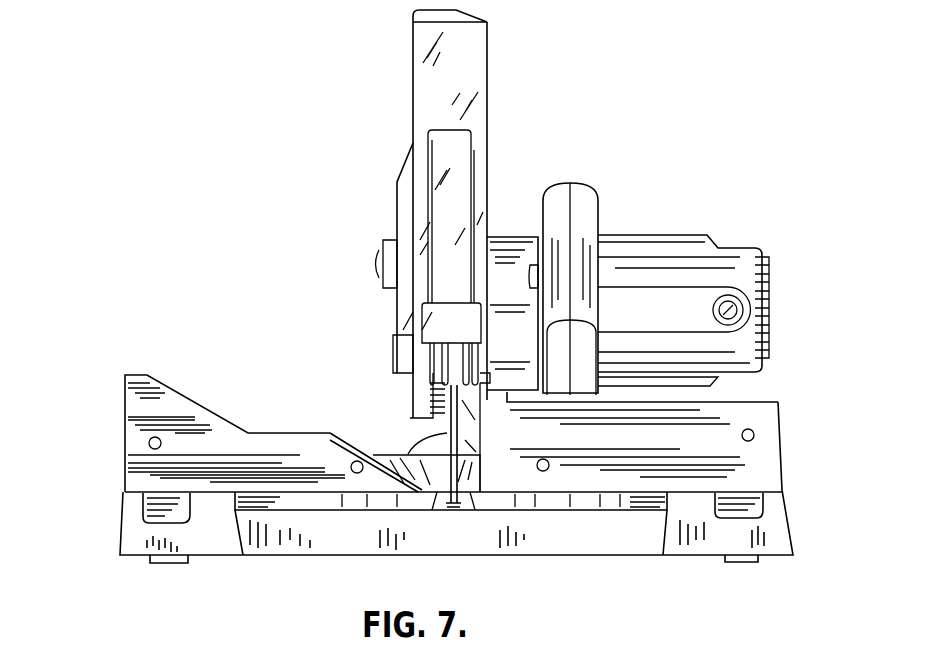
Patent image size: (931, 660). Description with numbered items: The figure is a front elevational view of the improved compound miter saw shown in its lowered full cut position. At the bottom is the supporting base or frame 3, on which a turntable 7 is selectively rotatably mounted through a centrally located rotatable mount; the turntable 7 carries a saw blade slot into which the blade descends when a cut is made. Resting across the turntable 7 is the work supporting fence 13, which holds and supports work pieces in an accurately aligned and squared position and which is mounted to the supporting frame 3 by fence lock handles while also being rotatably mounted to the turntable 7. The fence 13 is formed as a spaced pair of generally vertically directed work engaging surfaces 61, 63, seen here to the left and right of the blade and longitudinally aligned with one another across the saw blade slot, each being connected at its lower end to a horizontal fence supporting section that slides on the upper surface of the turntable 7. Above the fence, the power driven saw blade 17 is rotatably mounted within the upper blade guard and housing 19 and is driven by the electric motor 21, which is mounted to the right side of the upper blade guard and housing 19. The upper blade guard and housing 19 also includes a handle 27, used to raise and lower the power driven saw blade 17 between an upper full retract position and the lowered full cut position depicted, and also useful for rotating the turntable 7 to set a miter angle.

The supporting base or frame 3 is at (118, 540).
The turntable 7 is at (357, 507).
The work supporting fence 13 is at (270, 432).
The power driven saw blade 17 is at (440, 433).
The upper blade guard and housing 19 is at (450, 220).
The electric motor 21 is at (618, 260).
The handle 27 is at (580, 235).
The work engaging surface 61 is at (190, 458).
The work engaging surface 63 is at (741, 426).